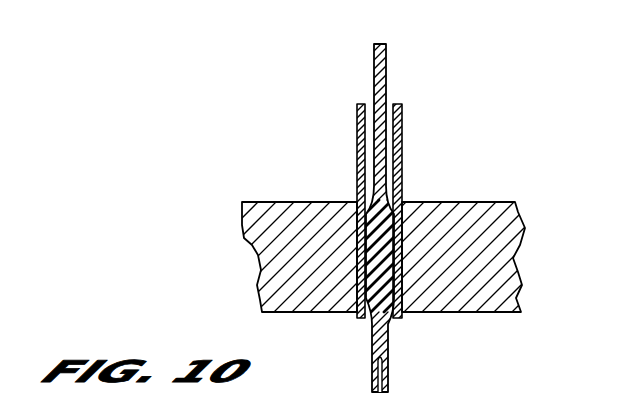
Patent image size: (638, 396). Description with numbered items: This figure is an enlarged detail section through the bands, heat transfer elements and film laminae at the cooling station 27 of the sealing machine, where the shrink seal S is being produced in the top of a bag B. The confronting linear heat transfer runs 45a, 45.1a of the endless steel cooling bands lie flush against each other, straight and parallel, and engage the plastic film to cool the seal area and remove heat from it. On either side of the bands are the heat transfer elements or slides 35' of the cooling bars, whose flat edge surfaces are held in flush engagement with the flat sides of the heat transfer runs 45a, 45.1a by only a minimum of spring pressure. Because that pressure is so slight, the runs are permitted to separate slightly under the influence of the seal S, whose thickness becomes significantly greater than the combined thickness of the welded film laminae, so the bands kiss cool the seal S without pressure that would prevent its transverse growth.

The cooling station 27 is at (428, 107).
The heat transfer run of cooling band 45.1a is at (357, 133).
The heat transfer run of cooling band 45a is at (402, 152).
The heat transfer element or slide 35' is at (376, 249).
The shrink seal S is at (377, 258).
The bag B is at (379, 358).